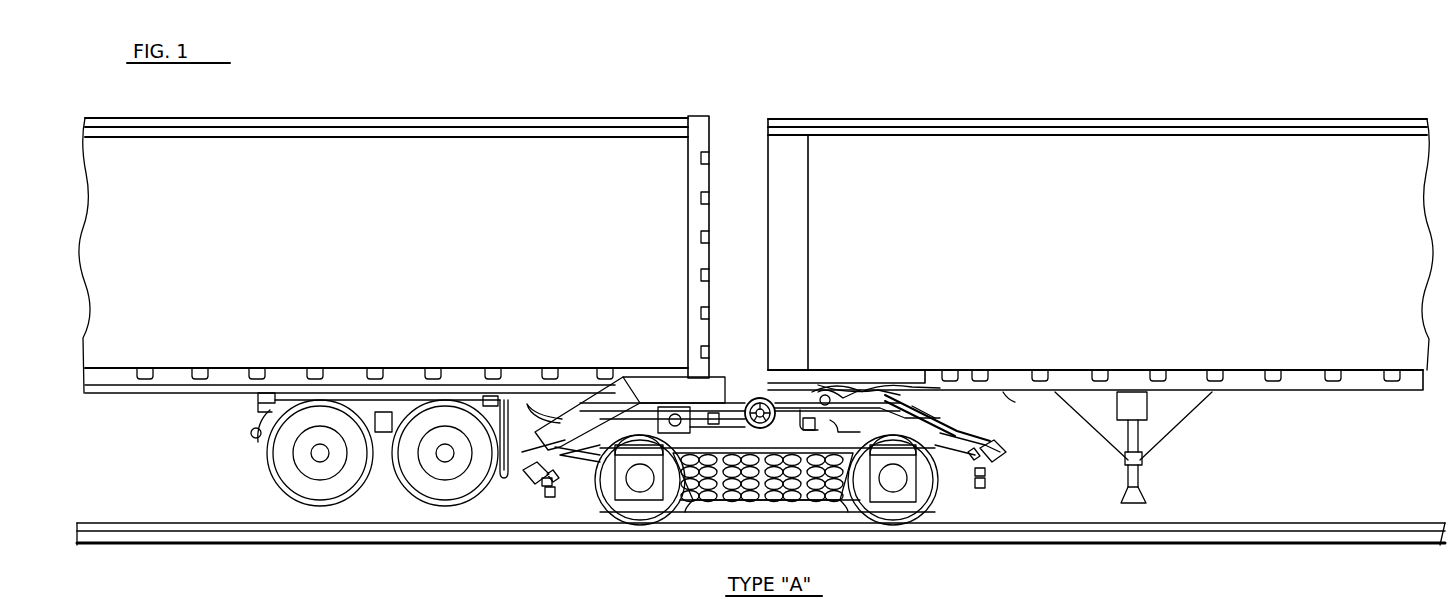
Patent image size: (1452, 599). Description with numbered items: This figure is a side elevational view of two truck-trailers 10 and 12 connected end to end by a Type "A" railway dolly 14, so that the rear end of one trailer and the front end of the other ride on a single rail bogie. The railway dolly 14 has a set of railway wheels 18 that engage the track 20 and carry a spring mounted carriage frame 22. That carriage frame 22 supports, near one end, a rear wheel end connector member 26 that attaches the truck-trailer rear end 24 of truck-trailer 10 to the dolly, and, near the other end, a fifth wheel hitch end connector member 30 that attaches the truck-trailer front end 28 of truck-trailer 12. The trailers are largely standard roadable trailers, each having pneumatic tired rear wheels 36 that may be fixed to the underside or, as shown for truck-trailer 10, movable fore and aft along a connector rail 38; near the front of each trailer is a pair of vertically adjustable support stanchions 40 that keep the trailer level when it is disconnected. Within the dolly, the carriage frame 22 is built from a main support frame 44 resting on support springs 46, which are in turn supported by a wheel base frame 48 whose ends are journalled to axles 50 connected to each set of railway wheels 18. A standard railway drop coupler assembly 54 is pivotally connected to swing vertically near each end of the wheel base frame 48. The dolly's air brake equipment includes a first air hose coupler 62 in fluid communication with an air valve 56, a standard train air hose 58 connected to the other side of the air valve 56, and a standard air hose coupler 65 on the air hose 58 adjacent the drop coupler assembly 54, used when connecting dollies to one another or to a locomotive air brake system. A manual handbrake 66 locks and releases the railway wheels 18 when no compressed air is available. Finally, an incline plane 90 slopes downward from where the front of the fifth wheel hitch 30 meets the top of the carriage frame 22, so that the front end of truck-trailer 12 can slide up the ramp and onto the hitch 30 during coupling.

The truck-trailer 10 is at (384, 112).
The truck-trailer 12 is at (1118, 100).
The Type "A" railway dolly 14 is at (978, 497).
The railway wheels 18 is at (600, 512).
The track 20 is at (193, 522).
The spring mounted carriage frame 22 is at (745, 398).
The truck-trailer rear end 24 is at (732, 102).
The rear wheel end connector member 26 is at (665, 374).
The truck-trailer front end 28 is at (764, 140).
The fifth wheel hitch end connector member 30 is at (848, 386).
The pneumatic tired rear wheels 36 is at (272, 482).
The connector rail 38 is at (258, 400).
The vertically adjustable support stanchions 40 is at (1133, 474).
The main support frame 44 is at (832, 430).
The support springs 46 is at (723, 455).
The wheel base frame 48 is at (781, 508).
The axles 50 is at (636, 479).
The railway drop coupler assembly 54 is at (530, 486).
The air valve 56 is at (806, 431).
The standard train air hose 58 is at (535, 406).
The first air hose coupler 62 is at (712, 411).
The standard air hose coupler 65 is at (543, 490).
The manual handbrake 66 is at (822, 401).
The incline plane 90 is at (946, 424).